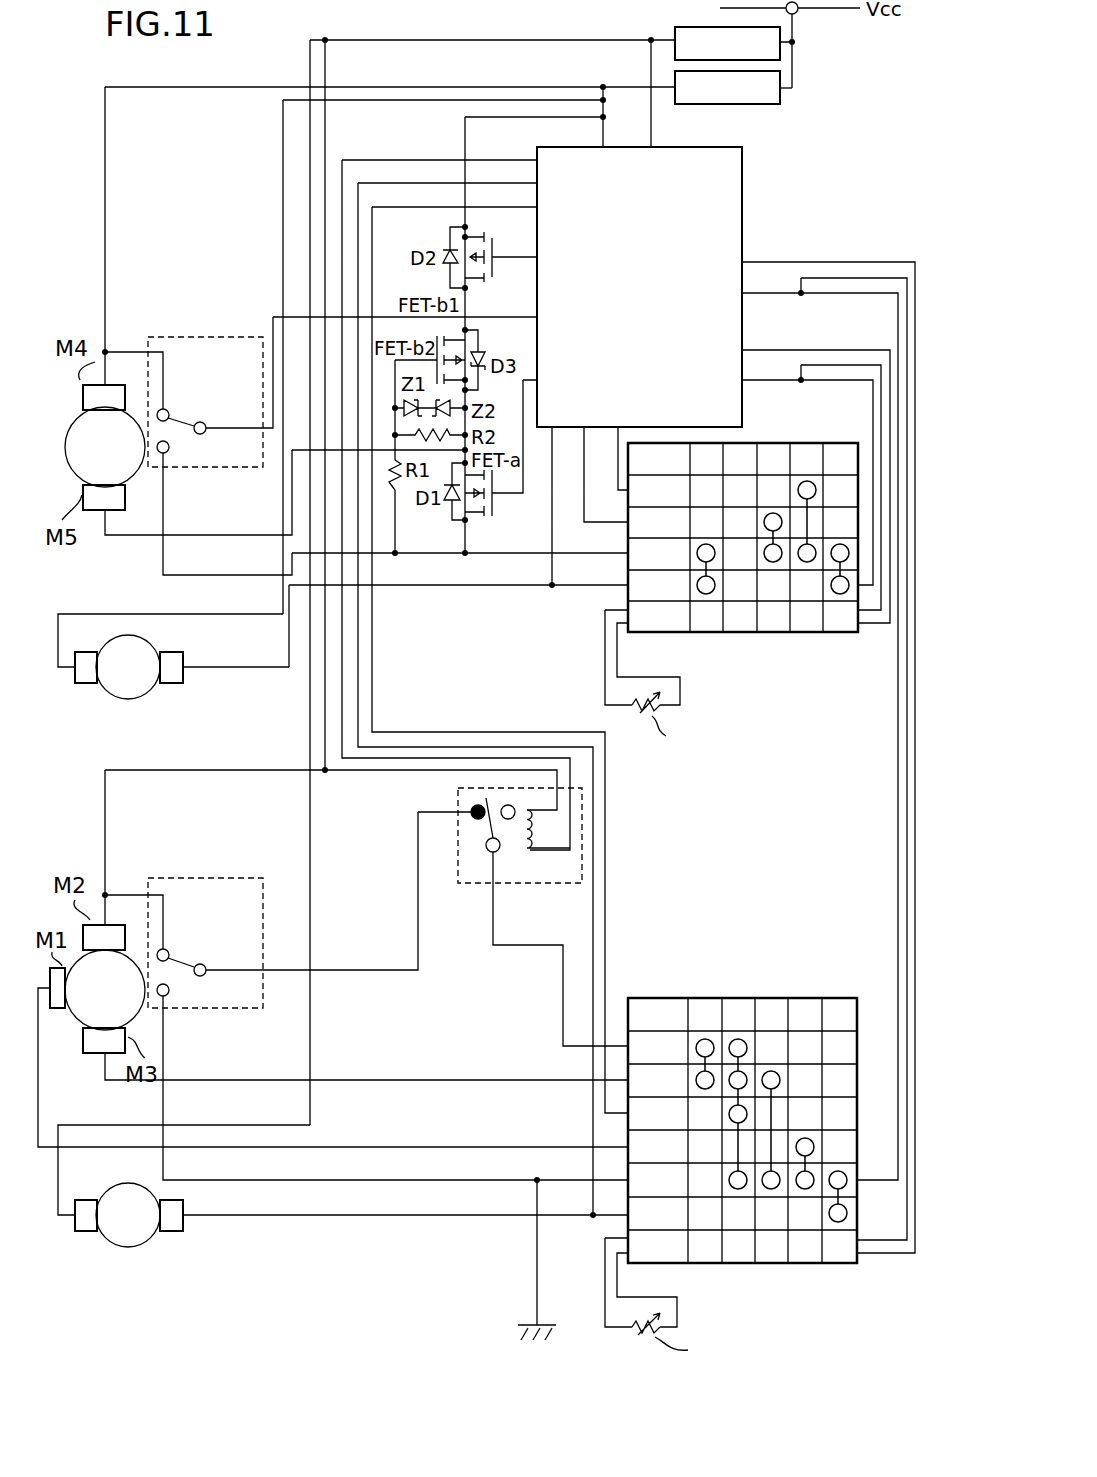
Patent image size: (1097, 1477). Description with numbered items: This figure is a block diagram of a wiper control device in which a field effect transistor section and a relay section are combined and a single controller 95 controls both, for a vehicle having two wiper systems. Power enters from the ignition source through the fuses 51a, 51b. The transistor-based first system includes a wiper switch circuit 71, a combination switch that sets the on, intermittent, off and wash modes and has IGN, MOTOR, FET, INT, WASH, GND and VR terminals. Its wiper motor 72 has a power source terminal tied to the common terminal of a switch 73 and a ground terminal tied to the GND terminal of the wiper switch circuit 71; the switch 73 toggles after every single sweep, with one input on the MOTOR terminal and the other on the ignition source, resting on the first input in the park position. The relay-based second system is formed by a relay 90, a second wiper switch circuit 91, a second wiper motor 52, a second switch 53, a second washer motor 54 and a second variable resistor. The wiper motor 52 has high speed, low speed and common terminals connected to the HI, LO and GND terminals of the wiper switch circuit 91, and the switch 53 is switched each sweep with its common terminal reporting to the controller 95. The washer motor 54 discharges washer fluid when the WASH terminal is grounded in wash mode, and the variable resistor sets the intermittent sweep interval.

The fuse 51a is at (782, 98).
The fuse 51b is at (673, 34).
The wiper motor 52 is at (133, 1020).
The switch 53 is at (198, 878).
The washer motor 54 is at (116, 697).
The wiper switch circuit 71 is at (720, 636).
The wiper motor 72 is at (135, 478).
The switch 73 is at (198, 337).
The relay 90 is at (476, 884).
The second wiper switch circuit 91 is at (670, 1266).
The controller 95 is at (743, 190).